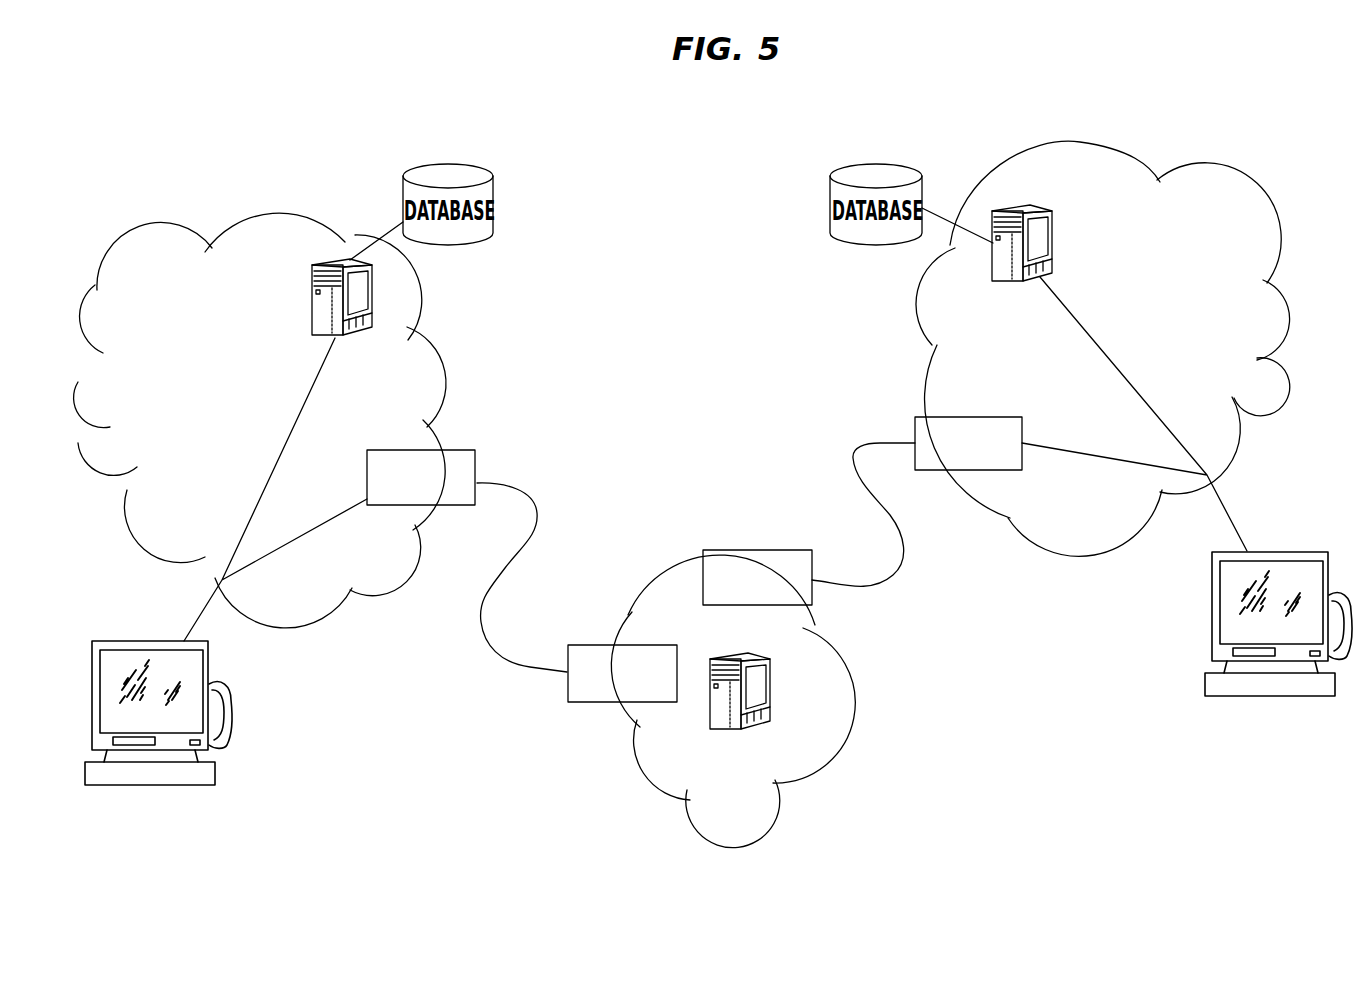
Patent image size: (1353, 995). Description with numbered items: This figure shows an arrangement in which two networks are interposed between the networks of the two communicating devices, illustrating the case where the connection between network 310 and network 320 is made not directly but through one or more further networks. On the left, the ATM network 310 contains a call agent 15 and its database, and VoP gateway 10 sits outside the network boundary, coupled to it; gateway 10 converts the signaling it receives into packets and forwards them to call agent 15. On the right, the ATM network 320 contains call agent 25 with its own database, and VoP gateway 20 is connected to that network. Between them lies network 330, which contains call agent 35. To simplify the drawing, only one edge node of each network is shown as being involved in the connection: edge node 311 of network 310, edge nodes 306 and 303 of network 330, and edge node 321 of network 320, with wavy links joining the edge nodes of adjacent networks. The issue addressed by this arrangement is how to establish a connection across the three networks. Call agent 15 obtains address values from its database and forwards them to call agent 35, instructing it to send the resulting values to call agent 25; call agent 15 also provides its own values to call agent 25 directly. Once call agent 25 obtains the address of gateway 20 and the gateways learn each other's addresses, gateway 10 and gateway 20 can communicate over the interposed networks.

The ATM network 310 is at (244, 222).
The call agent 15 is at (312, 300).
The VoP gateway 10 is at (163, 627).
The edge router of first network 311 is at (473, 451).
The network 330 is at (793, 779).
The domain 306 is at (630, 654).
The edge router of intermediate network 303 is at (760, 549).
The call agent 35 is at (770, 687).
The ATM network 320 is at (1242, 170).
The call agent 25 is at (1053, 241).
The edge router of second network 321 is at (916, 418).
The VoP gateway 20 is at (1189, 400).